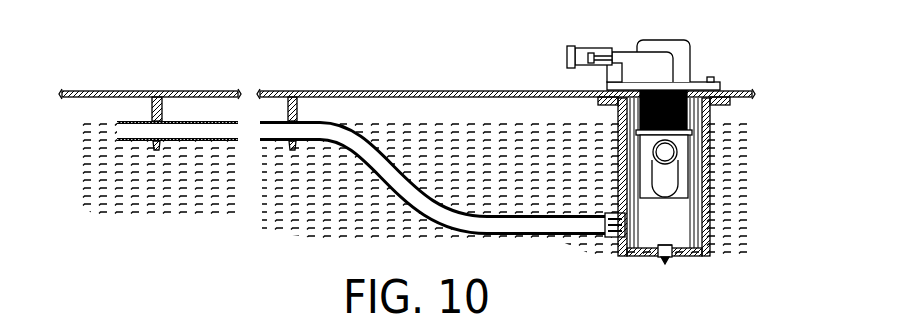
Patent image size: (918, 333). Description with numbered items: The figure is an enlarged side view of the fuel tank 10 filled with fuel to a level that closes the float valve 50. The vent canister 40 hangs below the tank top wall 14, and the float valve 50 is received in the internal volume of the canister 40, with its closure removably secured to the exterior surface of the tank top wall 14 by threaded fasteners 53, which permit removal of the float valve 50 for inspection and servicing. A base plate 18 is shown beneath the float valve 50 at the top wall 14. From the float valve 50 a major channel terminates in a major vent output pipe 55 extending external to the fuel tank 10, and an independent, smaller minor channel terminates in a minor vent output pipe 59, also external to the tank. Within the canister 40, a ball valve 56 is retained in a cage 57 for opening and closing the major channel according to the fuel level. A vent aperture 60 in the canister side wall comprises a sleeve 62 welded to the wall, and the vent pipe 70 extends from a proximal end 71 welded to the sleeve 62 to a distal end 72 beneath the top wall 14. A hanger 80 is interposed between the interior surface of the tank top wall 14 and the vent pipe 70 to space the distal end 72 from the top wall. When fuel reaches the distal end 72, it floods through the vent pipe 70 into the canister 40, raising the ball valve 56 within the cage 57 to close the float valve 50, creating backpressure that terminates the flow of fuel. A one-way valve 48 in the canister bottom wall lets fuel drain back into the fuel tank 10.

The fuel tank 10 is at (346, 91).
The tank top wall 14 is at (208, 91).
The mounting plate 18 is at (610, 85).
The vent canister 40 is at (706, 254).
The one-way valve 48 is at (666, 266).
The float valve 50 is at (661, 40).
The threaded fasteners 53 is at (714, 78).
The major vent output pipe 55 is at (570, 50).
The ball valve 56 is at (680, 156).
The cage 57 is at (688, 182).
The minor vent output pipe 59 is at (593, 52).
The vent aperture 60 is at (627, 256).
The sleeve 62 is at (612, 240).
The vent pipe 70 is at (382, 150).
The proximal end 71 is at (584, 236).
The distal end 72 is at (140, 121).
The hanger 80 is at (157, 121).